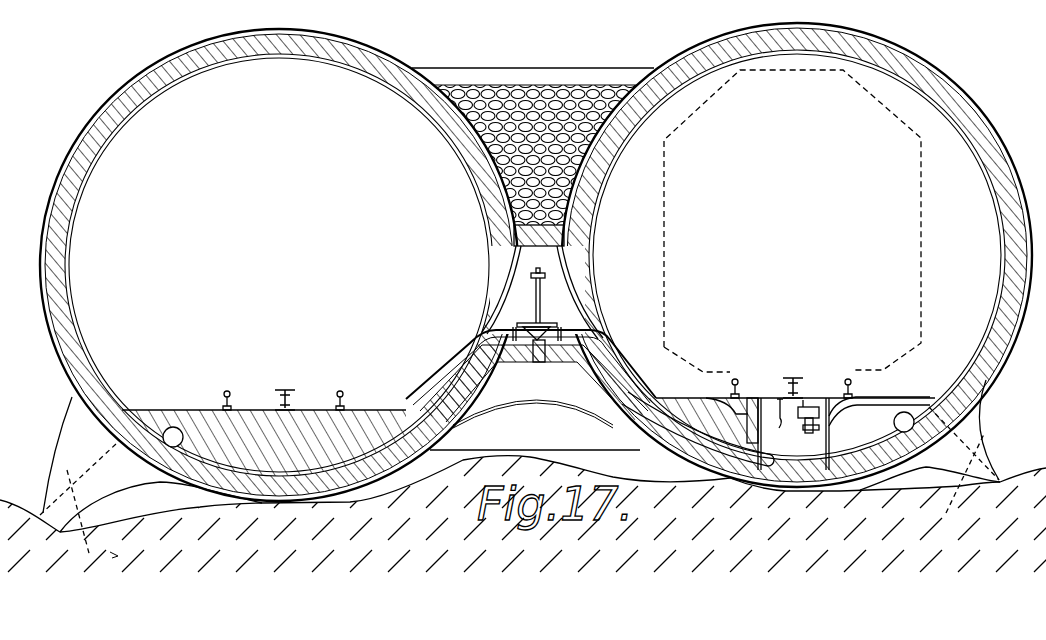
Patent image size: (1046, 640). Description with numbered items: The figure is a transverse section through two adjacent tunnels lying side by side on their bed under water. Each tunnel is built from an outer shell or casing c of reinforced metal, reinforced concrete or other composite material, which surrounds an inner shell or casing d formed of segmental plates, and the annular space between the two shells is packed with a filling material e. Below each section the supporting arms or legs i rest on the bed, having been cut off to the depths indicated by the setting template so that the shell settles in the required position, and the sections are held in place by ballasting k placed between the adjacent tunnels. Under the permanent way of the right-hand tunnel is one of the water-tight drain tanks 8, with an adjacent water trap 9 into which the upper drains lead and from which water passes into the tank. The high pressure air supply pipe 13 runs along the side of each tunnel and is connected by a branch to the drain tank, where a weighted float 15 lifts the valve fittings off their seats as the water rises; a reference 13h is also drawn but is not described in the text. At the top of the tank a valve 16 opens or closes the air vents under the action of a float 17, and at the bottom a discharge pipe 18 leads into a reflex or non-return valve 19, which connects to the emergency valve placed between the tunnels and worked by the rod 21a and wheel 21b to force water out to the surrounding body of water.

The outer shell or casing c is at (48, 188).
The inner shell or casing d is at (64, 283).
The filling material e is at (58, 238).
The ballasting k is at (532, 92).
The valve 16 is at (468, 357).
The reflex or non-return valve 19 is at (538, 328).
The rod 21a is at (543, 305).
The wheel 21b is at (540, 272).
The high pressure air supply pipe 13 is at (172, 427).
The rail 13h is at (290, 392).
The water trap 9 is at (730, 408).
The discharge pipe 18 is at (717, 448).
The float 17 is at (781, 425).
The weighted float 15 is at (810, 407).
The water-tight drain tank 8 is at (823, 448).
The supporting arms or legs i is at (82, 455).